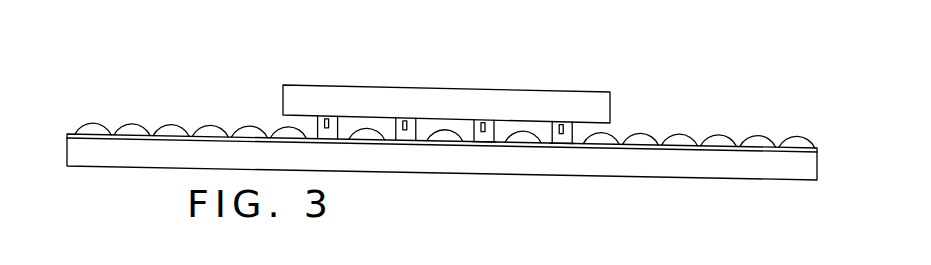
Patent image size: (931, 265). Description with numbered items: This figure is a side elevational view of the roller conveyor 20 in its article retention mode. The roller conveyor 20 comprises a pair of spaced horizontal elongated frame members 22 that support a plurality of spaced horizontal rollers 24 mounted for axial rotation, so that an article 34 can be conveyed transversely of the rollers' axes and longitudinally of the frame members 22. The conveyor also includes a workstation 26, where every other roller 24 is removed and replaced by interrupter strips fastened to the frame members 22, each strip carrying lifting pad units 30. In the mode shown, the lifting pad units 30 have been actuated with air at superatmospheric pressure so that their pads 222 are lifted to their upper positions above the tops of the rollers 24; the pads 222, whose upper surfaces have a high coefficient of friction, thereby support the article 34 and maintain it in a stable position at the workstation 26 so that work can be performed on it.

The roller conveyor 20 is at (707, 98).
The frame member 22 is at (108, 155).
The roller 24 is at (170, 128).
The workstation 26 is at (273, 114).
The article 34 is at (597, 108).
The pad 222 is at (563, 132).
The lifting pad unit 30 is at (568, 142).